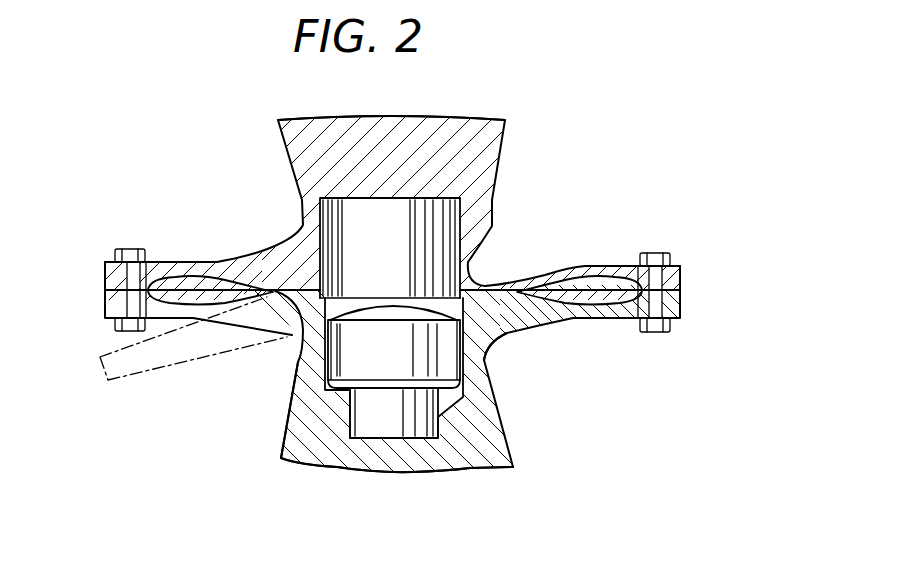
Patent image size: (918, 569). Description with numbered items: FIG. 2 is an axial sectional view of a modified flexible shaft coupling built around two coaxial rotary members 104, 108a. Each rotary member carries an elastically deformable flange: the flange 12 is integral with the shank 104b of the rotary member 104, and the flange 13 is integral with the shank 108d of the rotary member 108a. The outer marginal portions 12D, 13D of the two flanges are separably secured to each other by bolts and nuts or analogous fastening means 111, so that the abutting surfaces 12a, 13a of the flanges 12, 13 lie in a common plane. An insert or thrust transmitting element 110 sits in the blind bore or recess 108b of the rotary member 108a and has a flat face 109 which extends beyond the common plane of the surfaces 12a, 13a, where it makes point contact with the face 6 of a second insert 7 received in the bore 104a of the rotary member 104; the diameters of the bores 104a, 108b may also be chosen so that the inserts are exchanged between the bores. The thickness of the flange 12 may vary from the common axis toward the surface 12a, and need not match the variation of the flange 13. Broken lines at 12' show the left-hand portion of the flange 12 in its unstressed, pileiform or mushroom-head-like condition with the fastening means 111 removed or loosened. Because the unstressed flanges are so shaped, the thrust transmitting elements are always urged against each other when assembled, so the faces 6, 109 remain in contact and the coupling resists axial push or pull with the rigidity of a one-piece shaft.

The face 6 is at (390, 305).
The insert 7 is at (353, 378).
The elastically deformable flange 12 is at (661, 306).
The unstressed flange 12' is at (178, 368).
The abutting surface 12a is at (668, 290).
The outer marginal portion 12D is at (103, 305).
The elastically deformable flange 13 is at (683, 279).
The abutting surface 13a is at (633, 320).
The outer marginal portion 13D is at (105, 268).
The rotary member 104 is at (512, 442).
The bore 104a is at (337, 402).
The shank 104b is at (387, 465).
The rotary member 108a is at (503, 163).
The blind bore 108b is at (462, 208).
The shank 108d is at (370, 140).
The flat face 109 is at (490, 338).
The insert 110 is at (347, 223).
The fastening means 111 is at (143, 249).